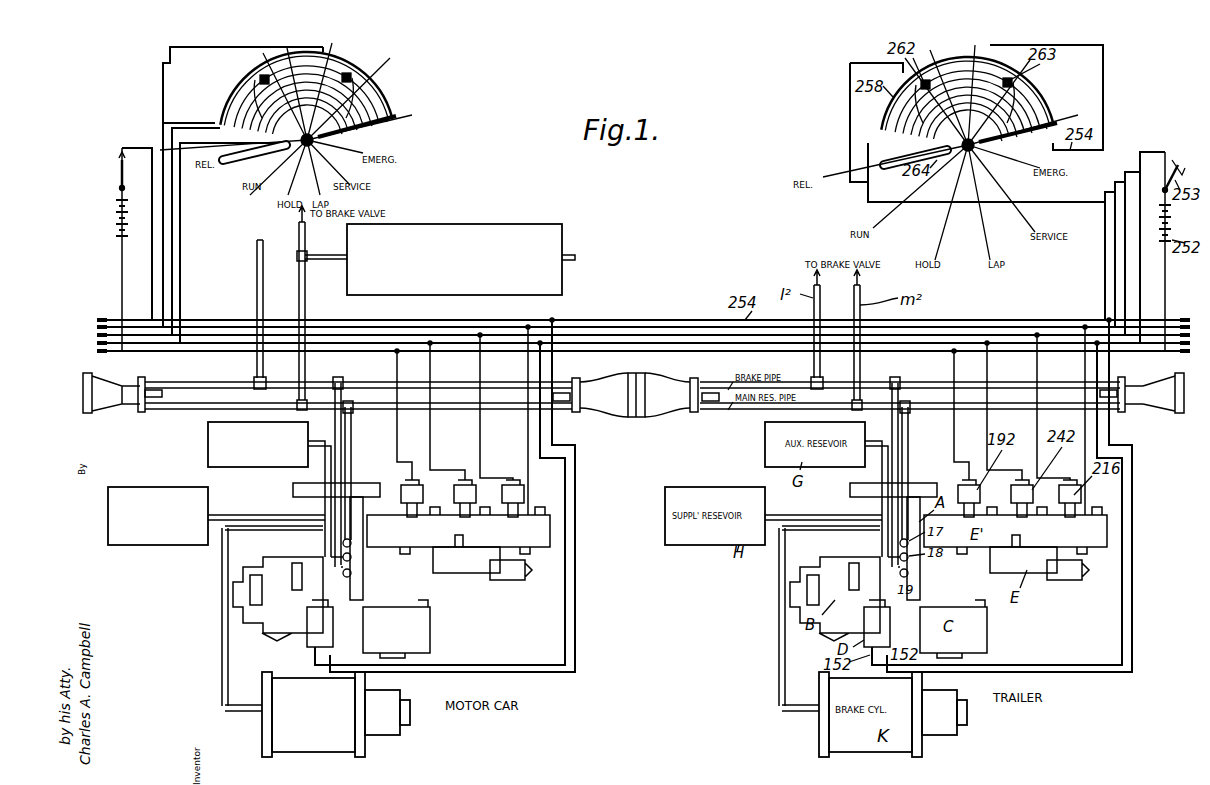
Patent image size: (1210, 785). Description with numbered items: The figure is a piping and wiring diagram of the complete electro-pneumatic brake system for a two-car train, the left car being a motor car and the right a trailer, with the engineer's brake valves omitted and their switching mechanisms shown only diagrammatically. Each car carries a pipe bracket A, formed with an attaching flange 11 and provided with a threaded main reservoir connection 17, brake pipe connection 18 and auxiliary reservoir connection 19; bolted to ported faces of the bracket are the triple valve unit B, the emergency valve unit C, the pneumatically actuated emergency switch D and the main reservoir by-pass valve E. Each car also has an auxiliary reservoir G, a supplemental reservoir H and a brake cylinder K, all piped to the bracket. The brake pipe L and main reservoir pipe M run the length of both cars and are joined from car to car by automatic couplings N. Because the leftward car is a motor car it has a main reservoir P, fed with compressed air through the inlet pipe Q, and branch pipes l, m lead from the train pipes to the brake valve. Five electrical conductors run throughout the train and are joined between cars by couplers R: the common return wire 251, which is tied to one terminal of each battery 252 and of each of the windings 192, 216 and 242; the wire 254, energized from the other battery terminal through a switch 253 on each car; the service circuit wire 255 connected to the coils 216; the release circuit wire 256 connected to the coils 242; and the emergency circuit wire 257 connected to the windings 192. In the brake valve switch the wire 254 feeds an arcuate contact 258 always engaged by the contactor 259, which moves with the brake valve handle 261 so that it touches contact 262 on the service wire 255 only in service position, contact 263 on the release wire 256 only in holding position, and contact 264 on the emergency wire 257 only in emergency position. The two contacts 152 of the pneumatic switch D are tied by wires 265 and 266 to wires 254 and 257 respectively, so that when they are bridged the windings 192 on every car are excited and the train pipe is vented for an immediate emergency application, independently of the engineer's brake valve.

The attaching flange 11 is at (293, 490).
The main reservoir connection 17 is at (352, 541).
The brake pipe connection 18 is at (352, 556).
The auxiliary reservoir connection 19 is at (347, 577).
The contacts 152 is at (313, 652).
The winding 192 is at (410, 497).
The coil 216 is at (517, 495).
The coil 242 is at (466, 497).
The common return wire 251 is at (706, 362).
The battery 252 is at (116, 235).
The switch 253 is at (118, 180).
The wire 254 is at (200, 118).
The service circuit wire 255 is at (618, 320).
The release circuit wire 256 is at (594, 327).
The emergency circuit wire 257 is at (181, 250).
The arcuate contact 258 is at (232, 88).
The contactor 259 is at (395, 122).
The brake valve handle 261 is at (238, 162).
The contact 262 is at (262, 76).
The contact 263 is at (350, 74).
The contact 264 is at (240, 140).
The wire 265 is at (522, 662).
The wire 266 is at (576, 638).
The pipe bracket A is at (357, 497).
The triple valve unit B is at (278, 600).
The emergency valve unit C is at (396, 629).
The pneumatically actuated emergency switch D is at (307, 635).
The main reservoir by-pass valve E is at (463, 588).
The auxiliary reservoir G is at (235, 462).
The supplemental reservoir H is at (182, 545).
The brake cylinder K is at (336, 714).
The brake pipe L is at (448, 382).
The main reservoir pipe M is at (503, 409).
The automatic couplings N is at (605, 400).
The main reservoir P is at (454, 259).
The inlet pipe Q is at (575, 258).
The couplers R is at (97, 320).
The branch pipe l is at (268, 268).
The branch pipe m is at (305, 300).